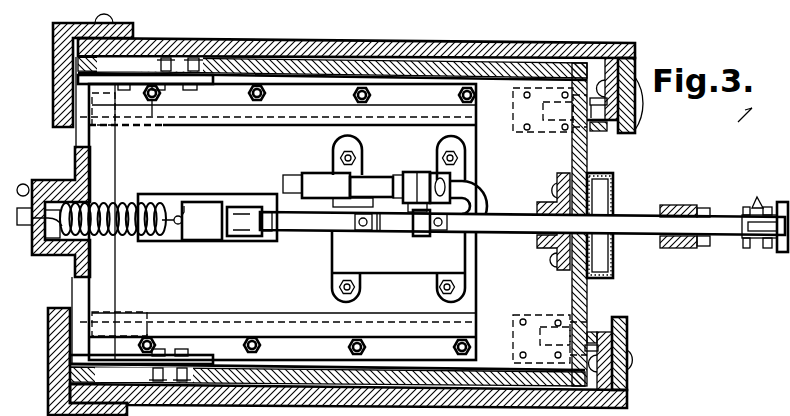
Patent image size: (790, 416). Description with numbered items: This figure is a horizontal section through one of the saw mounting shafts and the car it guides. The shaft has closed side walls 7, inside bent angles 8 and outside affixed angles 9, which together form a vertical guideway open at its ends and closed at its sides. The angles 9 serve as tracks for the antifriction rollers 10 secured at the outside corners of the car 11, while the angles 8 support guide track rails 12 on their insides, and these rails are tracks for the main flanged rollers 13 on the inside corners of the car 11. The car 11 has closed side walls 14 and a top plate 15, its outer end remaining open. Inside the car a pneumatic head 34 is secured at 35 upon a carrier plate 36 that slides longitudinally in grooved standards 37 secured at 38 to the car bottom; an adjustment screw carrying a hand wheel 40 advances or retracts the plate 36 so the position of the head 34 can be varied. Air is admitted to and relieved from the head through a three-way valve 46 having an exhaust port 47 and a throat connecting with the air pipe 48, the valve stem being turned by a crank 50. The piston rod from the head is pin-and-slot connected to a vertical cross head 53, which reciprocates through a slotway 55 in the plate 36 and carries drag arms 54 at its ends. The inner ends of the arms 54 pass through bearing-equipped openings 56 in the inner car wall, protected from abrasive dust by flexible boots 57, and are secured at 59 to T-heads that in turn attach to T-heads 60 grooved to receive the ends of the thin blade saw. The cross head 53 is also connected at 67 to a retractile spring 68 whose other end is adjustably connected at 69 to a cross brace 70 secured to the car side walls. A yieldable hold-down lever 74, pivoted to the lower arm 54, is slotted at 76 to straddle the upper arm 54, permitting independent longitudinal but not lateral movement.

The closed side walls 7 is at (425, 47).
The inside bent angles 8 is at (638, 121).
The outside affixed angles 9 is at (54, 64).
The antifriction rollers 10 is at (70, 112).
The car 11 is at (571, 289).
The guide track rails 12 is at (603, 133).
The main flanged rollers 13 is at (566, 128).
The closed side walls 14 is at (320, 66).
The top plate 15 is at (485, 196).
The pneumatic head 34 is at (335, 265).
The securing means 35 is at (437, 287).
The carrier plate 36 is at (125, 282).
The grooved standards 37 is at (241, 116).
The securing means 38 is at (262, 98).
The hand wheel 40 is at (92, 173).
The three-way valve 46 is at (417, 172).
The exhaust port 47 is at (446, 186).
The air pipe 48 is at (357, 183).
The turning crank 50 is at (403, 226).
The cross head 53 is at (196, 242).
The drag arms 54 is at (338, 228).
The slotway 55 is at (240, 242).
The bearing-equipped openings 56 is at (545, 244).
The flexible boots 57 is at (613, 257).
The securing means 59 is at (757, 207).
The T-heads 60 is at (778, 248).
The spring connection 67 is at (178, 216).
The retractile spring 68 is at (120, 237).
The adjustable connection 69 is at (37, 250).
The cross brace 70 is at (27, 185).
The hold-down lever 74 is at (697, 199).
The slot 76 is at (688, 245).